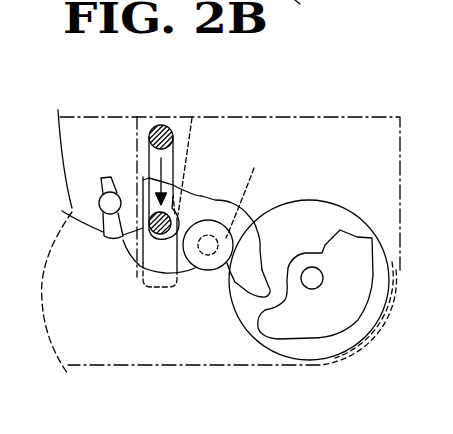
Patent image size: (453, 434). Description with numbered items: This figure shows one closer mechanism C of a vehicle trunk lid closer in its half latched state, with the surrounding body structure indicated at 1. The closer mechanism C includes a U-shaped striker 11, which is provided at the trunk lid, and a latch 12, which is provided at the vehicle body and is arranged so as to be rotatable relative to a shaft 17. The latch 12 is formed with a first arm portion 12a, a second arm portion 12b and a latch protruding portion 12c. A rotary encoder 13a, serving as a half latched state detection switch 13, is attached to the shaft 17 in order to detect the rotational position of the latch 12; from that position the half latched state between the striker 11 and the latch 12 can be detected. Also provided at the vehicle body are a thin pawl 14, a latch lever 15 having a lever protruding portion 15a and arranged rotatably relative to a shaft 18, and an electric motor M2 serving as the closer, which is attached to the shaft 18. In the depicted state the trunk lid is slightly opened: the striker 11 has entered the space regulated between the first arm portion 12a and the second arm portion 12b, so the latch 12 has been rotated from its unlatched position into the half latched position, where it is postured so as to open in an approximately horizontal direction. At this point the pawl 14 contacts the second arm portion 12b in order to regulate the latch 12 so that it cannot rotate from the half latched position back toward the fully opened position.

The image forming apparatus 1 is at (247, 242).
The striker 11 is at (160, 126).
The latch 12 is at (187, 238).
The first arm portion 12a is at (150, 203).
The second arm portion 12b is at (127, 250).
The latch protruding portion 12c is at (257, 283).
The half latched state detection switch 13 is at (181, 284).
The rotary encoder 13a is at (207, 270).
The pawl 14 is at (62, 212).
The latch lever 15 is at (324, 286).
The lever protruding portion 15a is at (266, 330).
The shaft 17 is at (249, 192).
The shaft 18 is at (313, 272).
The closer mechanism C is at (314, 110).
The electric motor M2 is at (302, 353).